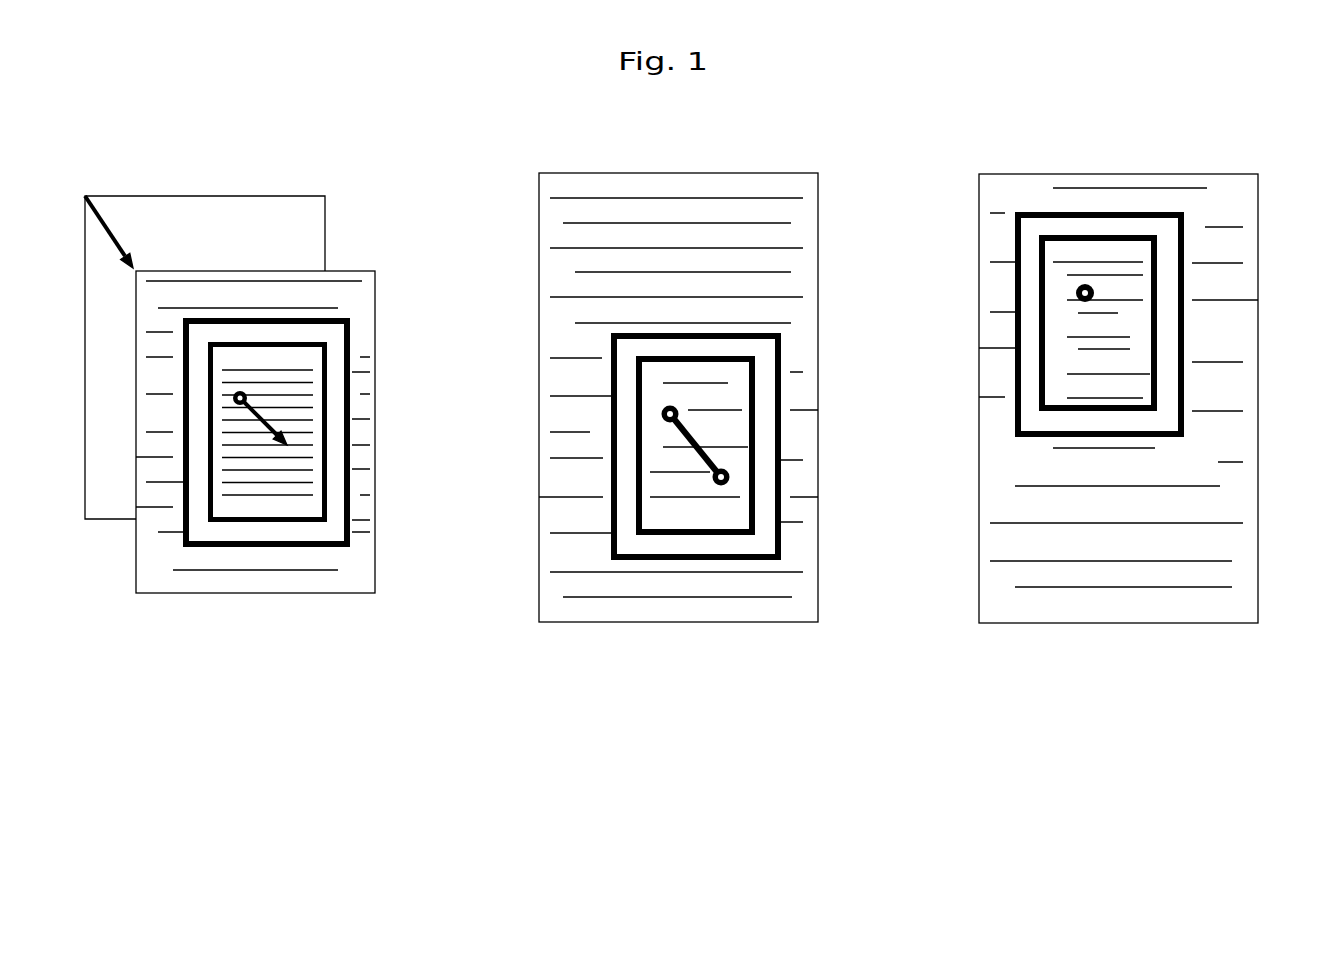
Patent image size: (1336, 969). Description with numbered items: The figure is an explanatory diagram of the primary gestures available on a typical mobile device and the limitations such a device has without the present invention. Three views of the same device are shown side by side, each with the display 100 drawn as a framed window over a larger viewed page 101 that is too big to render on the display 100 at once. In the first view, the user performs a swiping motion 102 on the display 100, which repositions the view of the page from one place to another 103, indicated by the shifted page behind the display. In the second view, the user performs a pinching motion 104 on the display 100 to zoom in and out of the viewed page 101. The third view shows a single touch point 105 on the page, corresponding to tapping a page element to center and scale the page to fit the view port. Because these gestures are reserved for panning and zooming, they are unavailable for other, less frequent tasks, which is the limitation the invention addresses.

The display 100 is at (299, 333).
The viewed page 101 is at (136, 569).
The swiping motion 102 is at (218, 418).
The repositioning of the view of the page 103 is at (110, 232).
The pinching motion 104 is at (688, 434).
The single touch point 105 is at (1093, 283).